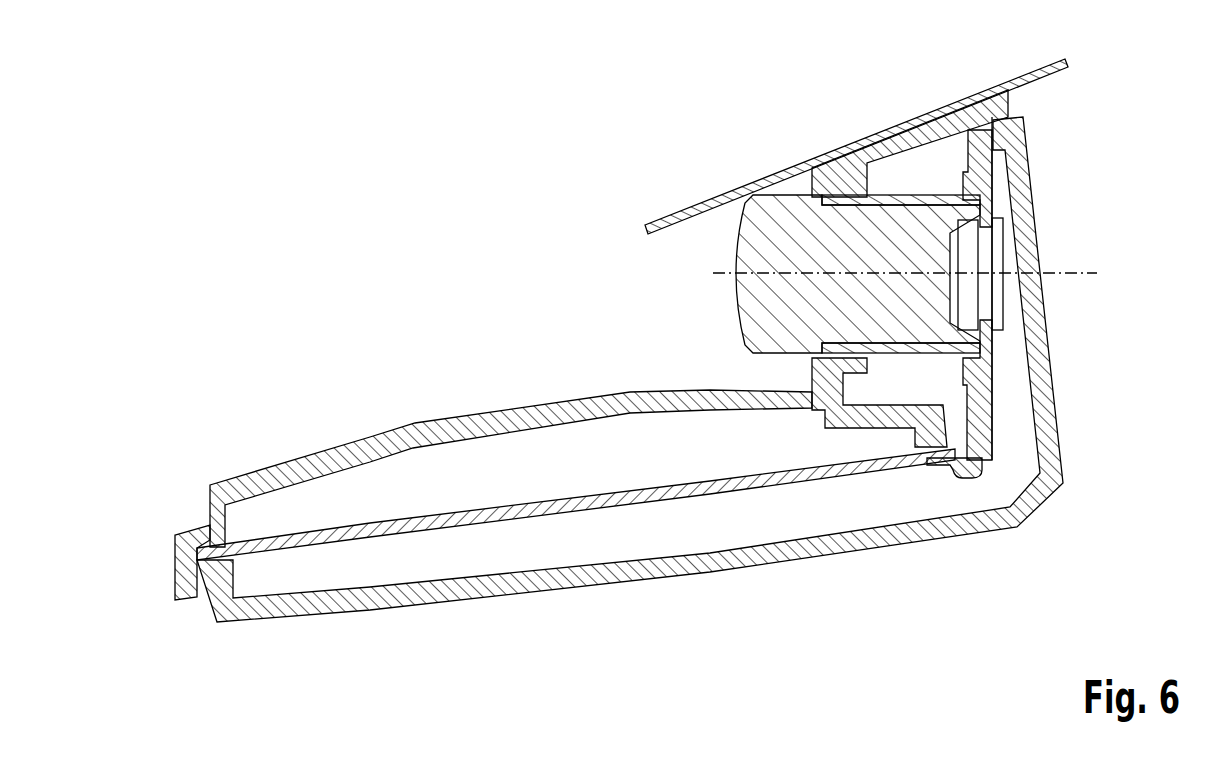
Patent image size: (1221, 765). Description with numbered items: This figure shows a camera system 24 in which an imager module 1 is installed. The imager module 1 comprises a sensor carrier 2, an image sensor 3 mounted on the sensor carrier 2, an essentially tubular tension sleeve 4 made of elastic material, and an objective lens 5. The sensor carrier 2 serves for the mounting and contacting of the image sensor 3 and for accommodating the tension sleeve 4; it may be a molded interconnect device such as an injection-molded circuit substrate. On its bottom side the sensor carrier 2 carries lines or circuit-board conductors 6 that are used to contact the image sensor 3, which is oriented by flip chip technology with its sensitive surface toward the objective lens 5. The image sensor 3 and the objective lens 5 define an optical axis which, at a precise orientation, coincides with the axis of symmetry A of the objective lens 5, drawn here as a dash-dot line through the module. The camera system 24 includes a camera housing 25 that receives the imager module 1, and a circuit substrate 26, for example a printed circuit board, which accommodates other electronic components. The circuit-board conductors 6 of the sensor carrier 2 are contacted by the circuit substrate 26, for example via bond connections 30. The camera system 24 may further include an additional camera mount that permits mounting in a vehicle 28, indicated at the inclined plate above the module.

The imager module 1 is at (548, 288).
The sensor carrier 2 is at (983, 383).
The image sensor 3 is at (1000, 312).
The tension sleeve 4 is at (832, 170).
The objective lens 5 is at (740, 302).
The circuit-board conductors 6 is at (1037, 452).
The camera system 24 is at (255, 668).
The camera housing 25 is at (460, 430).
The circuit substrate 26 is at (323, 545).
The vehicle 28 is at (700, 127).
The bond connections 30 is at (960, 472).
The axis of symmetry A is at (1058, 267).